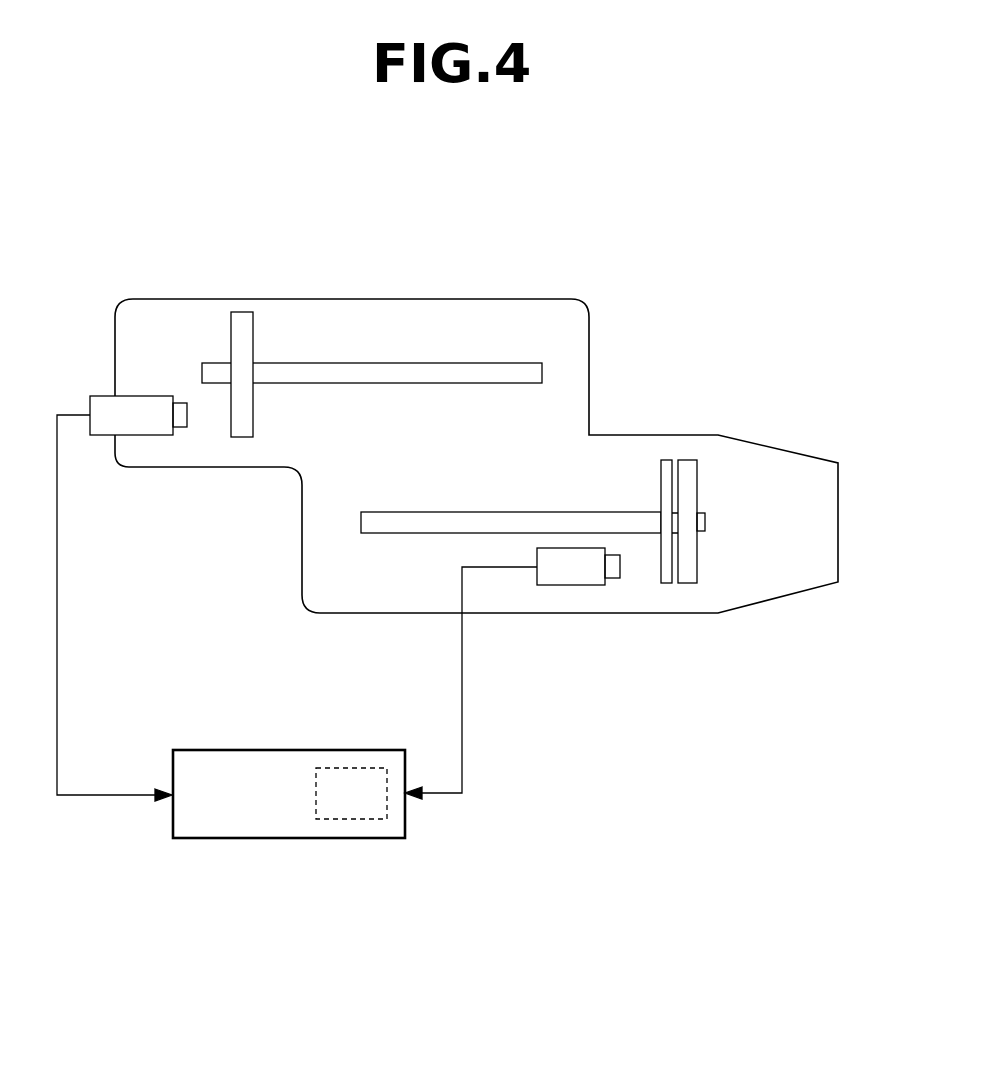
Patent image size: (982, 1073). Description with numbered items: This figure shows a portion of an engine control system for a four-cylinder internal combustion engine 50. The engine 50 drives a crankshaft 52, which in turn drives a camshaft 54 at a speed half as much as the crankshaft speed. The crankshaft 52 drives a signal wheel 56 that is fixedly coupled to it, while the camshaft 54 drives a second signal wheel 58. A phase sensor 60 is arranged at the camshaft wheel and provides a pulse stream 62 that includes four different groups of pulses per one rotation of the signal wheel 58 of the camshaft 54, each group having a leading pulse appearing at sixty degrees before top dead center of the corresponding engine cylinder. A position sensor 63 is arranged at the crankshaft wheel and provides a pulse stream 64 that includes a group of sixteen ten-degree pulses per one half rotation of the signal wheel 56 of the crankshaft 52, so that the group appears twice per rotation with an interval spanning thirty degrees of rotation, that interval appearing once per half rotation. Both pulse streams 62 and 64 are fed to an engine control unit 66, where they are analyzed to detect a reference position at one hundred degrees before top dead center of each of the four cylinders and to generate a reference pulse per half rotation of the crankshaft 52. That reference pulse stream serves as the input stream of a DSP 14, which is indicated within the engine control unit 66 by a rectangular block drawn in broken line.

The internal combustion engine 50 is at (673, 254).
The crankshaft 52 is at (460, 522).
The camshaft 54 is at (383, 370).
The signal wheel 56 is at (663, 460).
The signal wheel 58 is at (242, 318).
The phase sensor 60 is at (147, 436).
The pulse stream 62 is at (57, 655).
The position sensor 63 is at (575, 585).
The pulse stream 64 is at (463, 733).
The engine control unit 66 is at (285, 750).
The DSP 14 is at (352, 819).